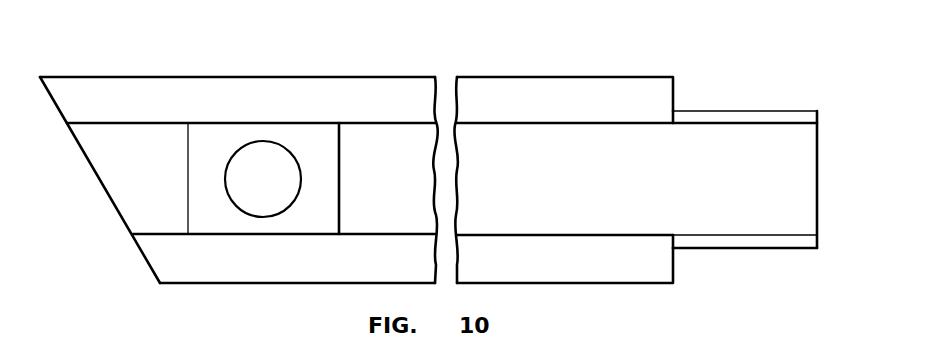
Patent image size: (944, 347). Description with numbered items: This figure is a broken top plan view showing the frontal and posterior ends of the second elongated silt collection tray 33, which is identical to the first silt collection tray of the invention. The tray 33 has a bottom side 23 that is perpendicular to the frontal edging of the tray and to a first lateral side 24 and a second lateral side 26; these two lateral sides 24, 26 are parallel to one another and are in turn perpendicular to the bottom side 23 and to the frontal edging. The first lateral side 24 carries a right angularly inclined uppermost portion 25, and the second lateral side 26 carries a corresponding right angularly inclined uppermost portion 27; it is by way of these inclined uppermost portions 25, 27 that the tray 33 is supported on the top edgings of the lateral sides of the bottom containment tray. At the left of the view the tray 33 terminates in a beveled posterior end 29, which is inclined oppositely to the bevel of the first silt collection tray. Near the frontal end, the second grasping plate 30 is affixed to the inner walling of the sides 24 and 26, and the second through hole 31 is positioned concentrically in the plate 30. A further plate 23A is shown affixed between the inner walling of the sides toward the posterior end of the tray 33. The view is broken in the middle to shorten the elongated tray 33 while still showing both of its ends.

The bottom side 23 is at (805, 189).
The block 23A is at (575, 213).
The first lateral side 24 is at (693, 122).
The right angularly inclined uppermost portion 25 is at (750, 113).
The second lateral side 26 is at (702, 237).
The right angularly inclined uppermost portion 27 is at (771, 238).
The beveled posterior end 29 is at (110, 199).
The second grasping plate 30 is at (207, 156).
The second through hole 31 is at (273, 165).
The second elongated silt collection tray 33 is at (376, 76).